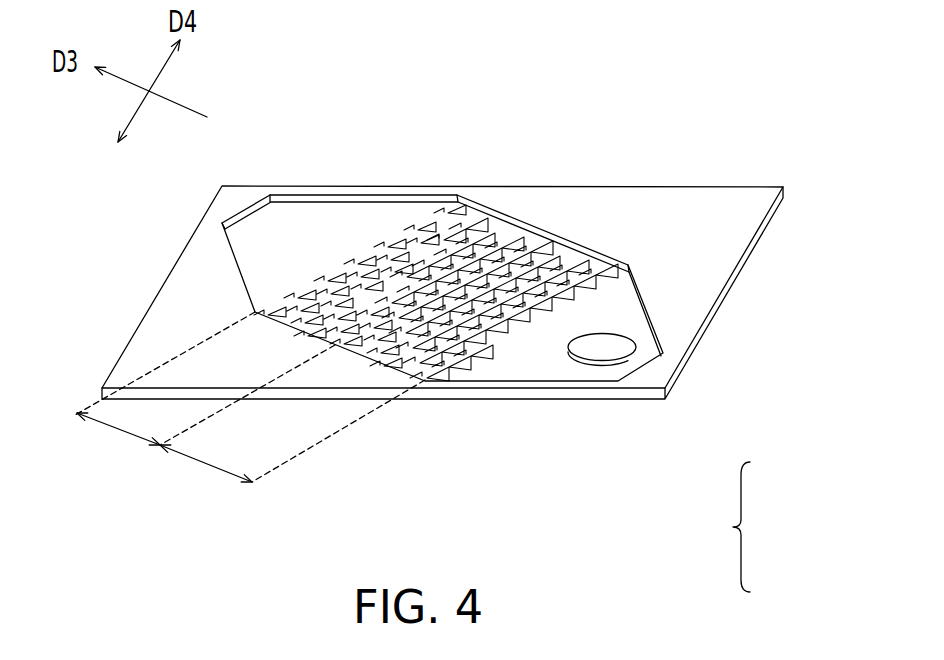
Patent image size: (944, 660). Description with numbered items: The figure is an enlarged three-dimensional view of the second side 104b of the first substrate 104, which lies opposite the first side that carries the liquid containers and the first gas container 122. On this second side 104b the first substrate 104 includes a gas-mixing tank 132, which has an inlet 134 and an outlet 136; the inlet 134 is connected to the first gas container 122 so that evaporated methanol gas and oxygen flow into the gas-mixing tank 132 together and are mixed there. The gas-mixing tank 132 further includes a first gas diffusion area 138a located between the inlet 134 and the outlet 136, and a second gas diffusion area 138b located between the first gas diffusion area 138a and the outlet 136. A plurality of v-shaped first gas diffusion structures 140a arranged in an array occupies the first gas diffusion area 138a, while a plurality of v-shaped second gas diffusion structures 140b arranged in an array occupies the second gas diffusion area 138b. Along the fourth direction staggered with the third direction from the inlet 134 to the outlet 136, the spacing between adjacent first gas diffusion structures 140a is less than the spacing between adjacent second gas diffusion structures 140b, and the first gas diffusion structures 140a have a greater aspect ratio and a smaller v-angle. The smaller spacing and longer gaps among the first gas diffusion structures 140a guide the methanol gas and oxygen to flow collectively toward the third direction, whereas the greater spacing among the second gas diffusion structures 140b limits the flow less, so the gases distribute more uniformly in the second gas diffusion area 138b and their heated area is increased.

The first substrate 104 is at (745, 258).
The second side 104b is at (676, 280).
The first gas container 122 is at (618, 317).
The gas-mixing tank 132 is at (742, 527).
The inlet 134 is at (598, 353).
The outlet 136 is at (273, 278).
The first gas diffusion area 138a is at (198, 463).
The second gas diffusion area 138b is at (124, 433).
The first gas diffusion structures 140a is at (581, 258).
The second gas diffusion structures 140b is at (494, 218).